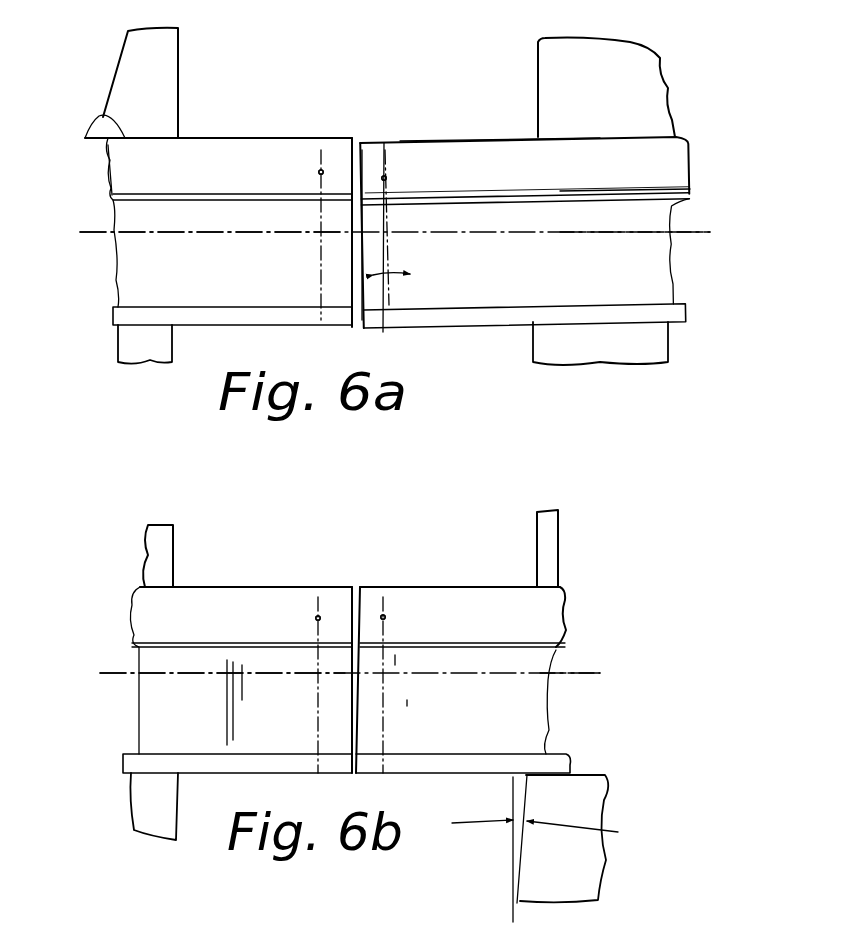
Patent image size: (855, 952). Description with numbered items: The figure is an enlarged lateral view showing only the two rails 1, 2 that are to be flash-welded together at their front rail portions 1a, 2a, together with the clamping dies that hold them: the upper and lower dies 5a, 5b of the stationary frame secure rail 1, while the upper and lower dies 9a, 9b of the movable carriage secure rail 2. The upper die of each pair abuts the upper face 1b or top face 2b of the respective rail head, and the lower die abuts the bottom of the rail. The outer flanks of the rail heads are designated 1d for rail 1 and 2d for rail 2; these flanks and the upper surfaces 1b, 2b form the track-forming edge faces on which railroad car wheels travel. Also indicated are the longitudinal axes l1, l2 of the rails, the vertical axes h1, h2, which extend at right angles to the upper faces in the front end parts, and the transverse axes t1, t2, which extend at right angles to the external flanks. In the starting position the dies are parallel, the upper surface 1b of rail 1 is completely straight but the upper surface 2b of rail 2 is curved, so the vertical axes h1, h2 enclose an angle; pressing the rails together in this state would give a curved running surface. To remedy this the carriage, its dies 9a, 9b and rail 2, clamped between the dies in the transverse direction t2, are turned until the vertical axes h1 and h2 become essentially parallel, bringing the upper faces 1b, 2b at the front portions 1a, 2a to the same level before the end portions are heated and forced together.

In FIG. 6a, the rail 1 is at (128, 215).
In FIG. 6b, the rail 1 is at (139, 625).
In FIG. 6a, the front rail portion 1a is at (356, 150).
In FIG. 6a, the upper face of rail head 1b is at (98, 117).
In FIG. 6a, the outer flank of rail head 1d is at (120, 168).
In FIG. 6a, the rail 2 is at (610, 262).
In FIG. 6b, the rail 2 is at (565, 640).
In FIG. 6a, the front rail portion 2a is at (372, 178).
In FIG. 6a, the top face of rail head 2b is at (474, 138).
In FIG. 6a, the outer flank of rail head 2d is at (598, 148).
In FIG. 6a, the upper clamping die 5a is at (140, 83).
In FIG. 6b, the upper clamping die 5a is at (152, 560).
In FIG. 6a, the lower clamping die 5b is at (145, 352).
In FIG. 6b, the lower clamping die 5b is at (154, 806).
In FIG. 6a, the upper clamping die 9a is at (568, 58).
In FIG. 6b, the upper clamping die 9a is at (548, 552).
In FIG. 6a, the lower clamping die 9b is at (626, 350).
In FIG. 6b, the lower clamping die 9b is at (560, 848).
In FIG. 6a, the vertical axis h1 is at (324, 150).
In FIG. 6b, the vertical axis h1 is at (318, 607).
In FIG. 6a, the vertical axis h2 is at (390, 260).
In FIG. 6b, the vertical axis h2 is at (386, 606).
In FIG. 6a, the transverse axis t1 is at (318, 172).
In FIG. 6b, the transverse axis t1 is at (316, 618).
In FIG. 6a, the transverse axis t2 is at (388, 178).
In FIG. 6b, the transverse axis t2 is at (386, 617).
In FIG. 6a, the longitudinal axis l1 is at (98, 242).
In FIG. 6b, the longitudinal axis l1 is at (132, 677).
In FIG. 6a, the longitudinal axis l2 is at (688, 232).
In FIG. 6b, the longitudinal axis l2 is at (588, 673).